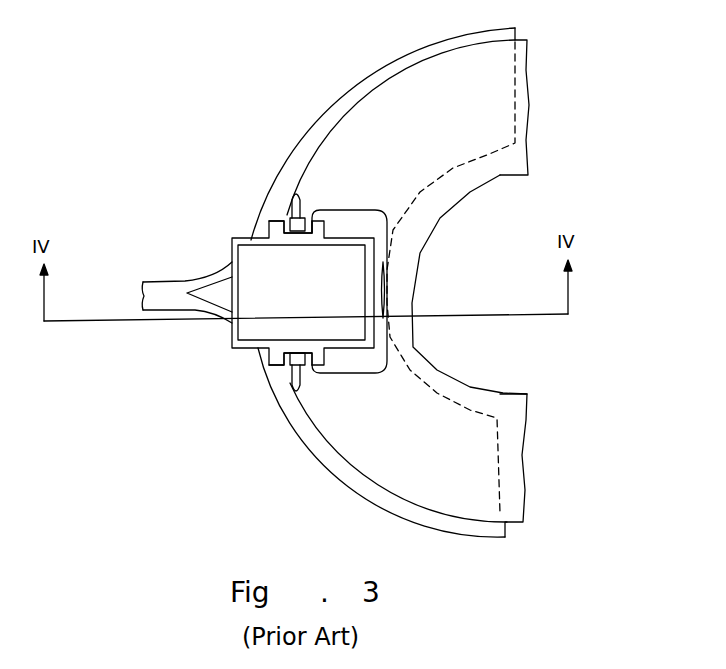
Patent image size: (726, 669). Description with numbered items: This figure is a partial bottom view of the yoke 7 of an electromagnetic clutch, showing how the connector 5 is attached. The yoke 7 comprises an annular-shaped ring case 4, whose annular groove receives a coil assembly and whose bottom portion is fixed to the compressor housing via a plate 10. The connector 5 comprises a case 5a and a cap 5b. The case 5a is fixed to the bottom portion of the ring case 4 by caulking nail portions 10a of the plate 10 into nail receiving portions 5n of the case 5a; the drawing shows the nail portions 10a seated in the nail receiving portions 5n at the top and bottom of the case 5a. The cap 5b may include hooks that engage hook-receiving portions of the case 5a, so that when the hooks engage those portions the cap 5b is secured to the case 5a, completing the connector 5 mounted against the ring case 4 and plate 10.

The ring case 4 is at (325, 112).
The connector 5 is at (243, 230).
The case 5a is at (240, 345).
The cap 5b is at (250, 332).
The nail receiving portions 5n is at (278, 220).
The yoke 7 is at (357, 80).
The plate 10 is at (488, 170).
The nail portions 10a is at (303, 220).